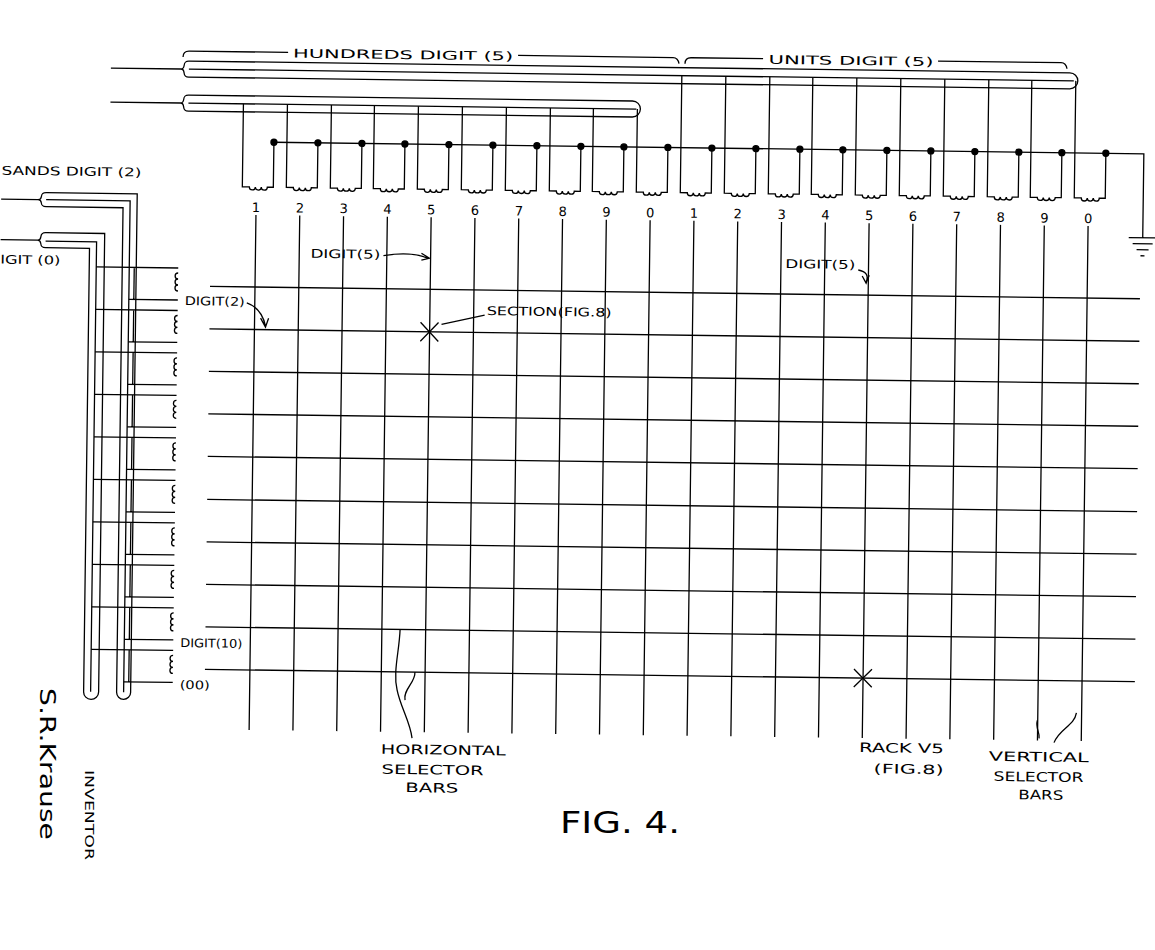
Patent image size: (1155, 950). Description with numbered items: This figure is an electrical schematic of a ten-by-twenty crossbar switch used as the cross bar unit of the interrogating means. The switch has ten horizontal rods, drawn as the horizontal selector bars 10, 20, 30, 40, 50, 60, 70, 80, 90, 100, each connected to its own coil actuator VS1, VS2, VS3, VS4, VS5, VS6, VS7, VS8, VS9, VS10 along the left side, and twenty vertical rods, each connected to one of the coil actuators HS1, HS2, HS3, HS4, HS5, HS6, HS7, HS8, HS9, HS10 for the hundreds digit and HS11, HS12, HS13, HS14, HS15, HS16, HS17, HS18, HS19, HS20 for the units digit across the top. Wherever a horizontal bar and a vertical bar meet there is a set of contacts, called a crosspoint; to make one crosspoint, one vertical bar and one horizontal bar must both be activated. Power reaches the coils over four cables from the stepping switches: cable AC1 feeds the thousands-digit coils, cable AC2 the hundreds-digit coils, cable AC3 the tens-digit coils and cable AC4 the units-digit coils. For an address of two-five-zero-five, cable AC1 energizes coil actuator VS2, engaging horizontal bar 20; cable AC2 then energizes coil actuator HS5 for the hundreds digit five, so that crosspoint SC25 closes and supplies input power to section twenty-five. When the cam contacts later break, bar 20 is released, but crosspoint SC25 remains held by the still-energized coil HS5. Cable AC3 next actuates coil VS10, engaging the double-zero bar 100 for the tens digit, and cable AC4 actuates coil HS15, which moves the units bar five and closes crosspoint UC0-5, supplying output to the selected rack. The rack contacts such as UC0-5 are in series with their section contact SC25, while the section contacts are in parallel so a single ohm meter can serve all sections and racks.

The coil actuator HS1 is at (259, 147).
The coil actuator HS2 is at (303, 147).
The coil actuator HS3 is at (347, 148).
The coil actuator HS4 is at (390, 149).
The coil actuator HS5 is at (434, 149).
The coil actuator HS6 is at (478, 150).
The coil actuator HS7 is at (522, 150).
The coil actuator HS8 is at (566, 151).
The coil actuator HS9 is at (609, 151).
The coil actuator HS10 is at (653, 152).
The coil actuator HS11 is at (698, 136).
The coil actuator HS12 is at (742, 136).
The coil actuator HS13 is at (786, 137).
The coil actuator HS14 is at (829, 137).
The coil actuator HS15 is at (873, 138).
The coil actuator HS16 is at (917, 139).
The coil actuator HS17 is at (961, 139).
The coil actuator HS18 is at (1005, 140).
The coil actuator HS19 is at (1048, 140).
The coil actuator HS20 is at (1092, 141).
The coil actuator VS1 is at (137, 283).
The coil actuator VS2 is at (136, 325).
The coil actuator VS3 is at (136, 368).
The coil actuator VS4 is at (135, 410).
The coil actuator VS5 is at (135, 453).
The coil actuator VS6 is at (134, 495).
The coil actuator VS7 is at (133, 538).
The coil actuator VS8 is at (133, 580).
The coil actuator VS9 is at (132, 623).
The coil actuator VS10 is at (132, 665).
The cable AC1 is at (68, 441).
The cable AC2 is at (321, 101).
The cable AC3 is at (52, 462).
The cable AC4 is at (539, 70).
The crosspoint SC25 is at (441, 323).
The crosspoint UC05 UC0-5 is at (862, 671).
The horizontal bar 10 is at (662, 293).
The bar 20 is at (661, 336).
The horizontal bar 30 is at (661, 378).
The horizontal bar 40 is at (660, 421).
The horizontal bar 50 is at (660, 463).
The horizontal bar 60 is at (659, 506).
The horizontal bar 70 is at (659, 549).
The horizontal bar 80 is at (658, 591).
The horizontal bar 90 is at (657, 634).
The bar 00 100 is at (654, 676).